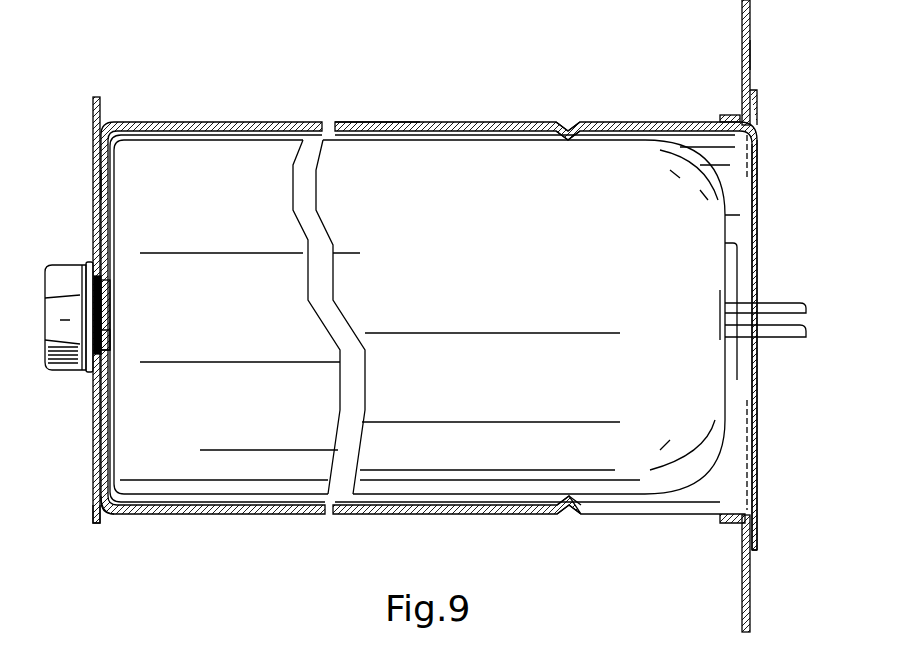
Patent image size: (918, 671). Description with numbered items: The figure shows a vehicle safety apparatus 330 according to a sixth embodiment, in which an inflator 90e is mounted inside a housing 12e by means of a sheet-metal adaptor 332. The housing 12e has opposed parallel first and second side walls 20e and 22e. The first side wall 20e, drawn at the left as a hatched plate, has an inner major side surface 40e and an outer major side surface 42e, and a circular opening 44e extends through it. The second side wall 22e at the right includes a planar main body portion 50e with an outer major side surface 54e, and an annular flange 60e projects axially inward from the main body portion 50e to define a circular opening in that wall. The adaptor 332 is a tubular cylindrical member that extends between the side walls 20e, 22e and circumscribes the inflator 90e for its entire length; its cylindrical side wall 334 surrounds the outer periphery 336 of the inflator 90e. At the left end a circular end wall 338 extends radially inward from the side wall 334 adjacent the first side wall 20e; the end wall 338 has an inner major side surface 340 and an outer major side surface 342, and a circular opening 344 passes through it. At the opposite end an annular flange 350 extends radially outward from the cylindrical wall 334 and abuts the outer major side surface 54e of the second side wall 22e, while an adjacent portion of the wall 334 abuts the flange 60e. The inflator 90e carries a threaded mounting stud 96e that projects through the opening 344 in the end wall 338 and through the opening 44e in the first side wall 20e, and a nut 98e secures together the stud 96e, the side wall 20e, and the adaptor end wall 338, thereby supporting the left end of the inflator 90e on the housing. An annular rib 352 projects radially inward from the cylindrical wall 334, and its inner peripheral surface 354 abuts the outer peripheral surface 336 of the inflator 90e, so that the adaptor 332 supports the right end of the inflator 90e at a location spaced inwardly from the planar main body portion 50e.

The housing 12e is at (85, 118).
The first side wall 20e is at (106, 108).
The second side wall 22e is at (740, 580).
The inner major side surface 40e is at (103, 515).
The outer major side surface 42e is at (92, 518).
The circular opening 44e is at (63, 307).
The planar main body portion 50e is at (752, 16).
The outer major side surface 54e is at (750, 52).
The annular flange 60e is at (731, 116).
The inflator 90e is at (460, 317).
The threaded mounting stud 96e is at (103, 338).
The nut 98e is at (67, 366).
The vehicle safety apparatus 330 is at (432, 294).
The adaptor 332 is at (452, 119).
The cylindrical side wall 334 is at (372, 121).
The outer periphery 336 is at (373, 516).
The circular end wall 338 is at (106, 215).
The inner major side surface 340 is at (110, 184).
The outer major side surface 342 is at (95, 182).
The circular opening 344 is at (110, 290).
The annular flange 350 is at (758, 107).
The annular rib 352 is at (568, 125).
The inner peripheral surface 354 is at (565, 499).